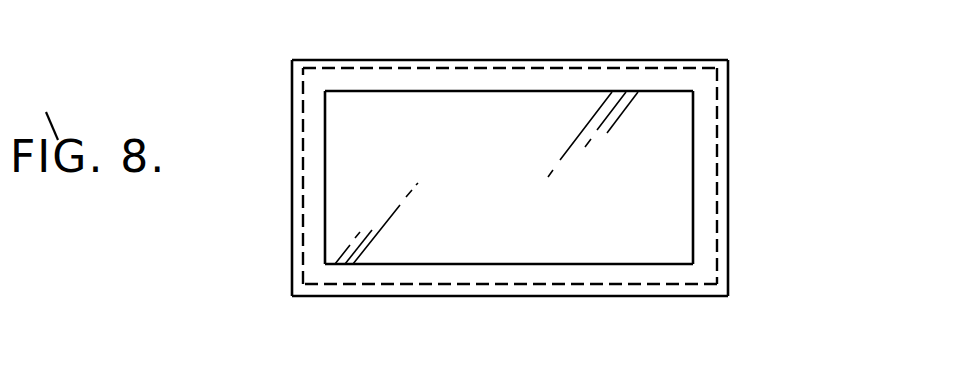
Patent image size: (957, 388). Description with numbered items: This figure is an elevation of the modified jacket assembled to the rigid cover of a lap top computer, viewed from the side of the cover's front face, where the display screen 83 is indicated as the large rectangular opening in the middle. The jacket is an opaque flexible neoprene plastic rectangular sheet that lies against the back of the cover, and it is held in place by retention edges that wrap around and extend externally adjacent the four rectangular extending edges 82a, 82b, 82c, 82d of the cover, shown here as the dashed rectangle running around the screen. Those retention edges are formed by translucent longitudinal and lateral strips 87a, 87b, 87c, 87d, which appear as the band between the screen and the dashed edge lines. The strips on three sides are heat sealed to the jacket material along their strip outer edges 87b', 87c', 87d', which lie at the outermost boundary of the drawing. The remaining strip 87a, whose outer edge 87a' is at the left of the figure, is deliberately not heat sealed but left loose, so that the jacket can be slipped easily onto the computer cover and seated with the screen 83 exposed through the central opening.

The display screen 83 is at (561, 183).
The rectangular extending edge of cover 82a is at (303, 240).
The rectangular extending edge of cover 82b is at (717, 177).
The rectangular extending edge of cover 82c is at (523, 283).
The rectangular extending edge of cover 82d is at (372, 68).
The translucent strip 87a is at (237, 177).
The translucent strip 87b is at (760, 177).
The translucent strip 87c is at (509, 313).
The translucent strip 87d is at (509, 118).
The strip outer edge 87a' is at (224, 176).
The strip outer edge 87b' is at (781, 178).
The strip outer edge 87c' is at (510, 326).
The strip outer edge 87d' is at (510, 32).